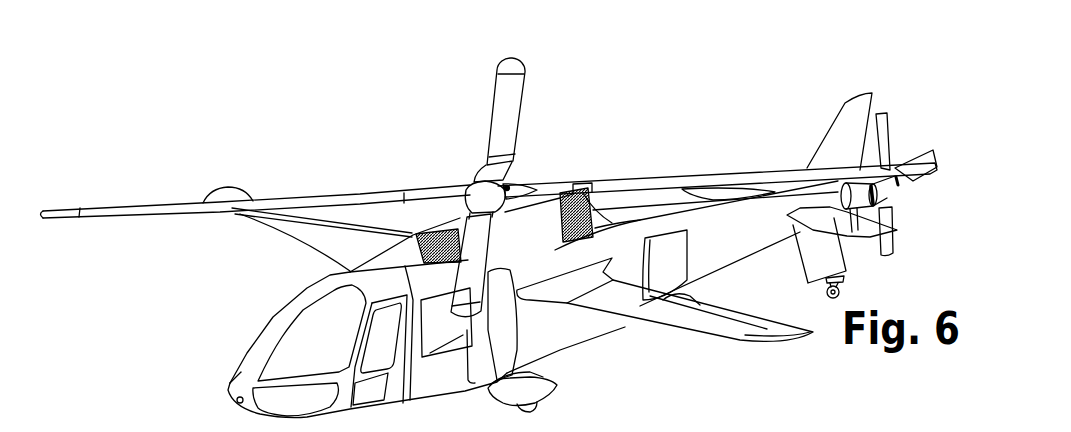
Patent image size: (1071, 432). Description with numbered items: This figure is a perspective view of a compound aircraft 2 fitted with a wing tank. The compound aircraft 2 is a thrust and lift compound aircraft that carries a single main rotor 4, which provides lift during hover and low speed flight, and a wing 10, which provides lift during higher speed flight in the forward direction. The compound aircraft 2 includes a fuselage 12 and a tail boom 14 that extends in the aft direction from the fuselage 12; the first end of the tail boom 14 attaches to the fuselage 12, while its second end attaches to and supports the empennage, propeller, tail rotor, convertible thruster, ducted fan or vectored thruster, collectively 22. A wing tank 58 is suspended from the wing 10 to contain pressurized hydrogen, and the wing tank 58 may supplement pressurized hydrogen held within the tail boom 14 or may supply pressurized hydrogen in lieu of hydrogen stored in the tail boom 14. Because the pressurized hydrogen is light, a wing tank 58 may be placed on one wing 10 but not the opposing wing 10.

The compound aircraft 2 is at (261, 338).
The main rotor 4 is at (493, 140).
The wing 10 is at (227, 187).
The fuselage 12 is at (642, 220).
The tail boom 14 is at (731, 242).
The tail-mounted thrust and control components 22 is at (842, 108).
The wing tank 58 is at (607, 323).